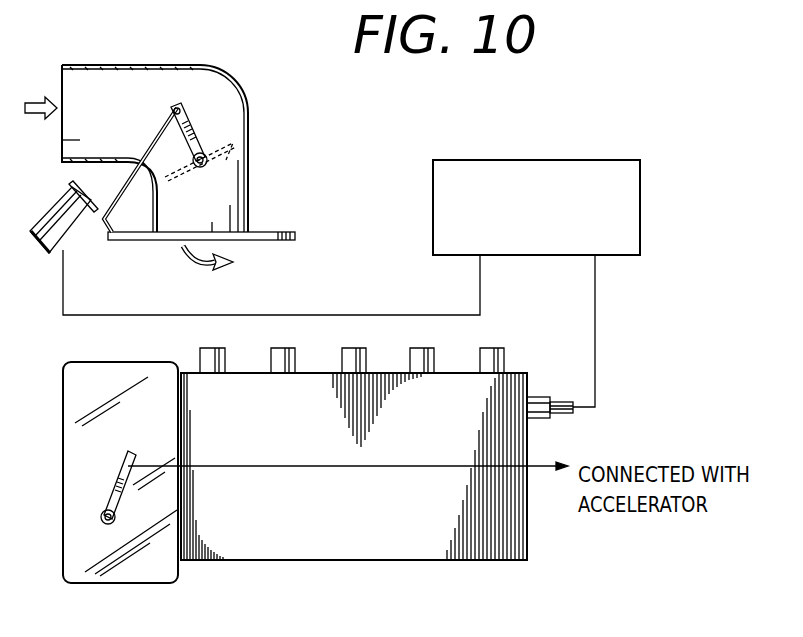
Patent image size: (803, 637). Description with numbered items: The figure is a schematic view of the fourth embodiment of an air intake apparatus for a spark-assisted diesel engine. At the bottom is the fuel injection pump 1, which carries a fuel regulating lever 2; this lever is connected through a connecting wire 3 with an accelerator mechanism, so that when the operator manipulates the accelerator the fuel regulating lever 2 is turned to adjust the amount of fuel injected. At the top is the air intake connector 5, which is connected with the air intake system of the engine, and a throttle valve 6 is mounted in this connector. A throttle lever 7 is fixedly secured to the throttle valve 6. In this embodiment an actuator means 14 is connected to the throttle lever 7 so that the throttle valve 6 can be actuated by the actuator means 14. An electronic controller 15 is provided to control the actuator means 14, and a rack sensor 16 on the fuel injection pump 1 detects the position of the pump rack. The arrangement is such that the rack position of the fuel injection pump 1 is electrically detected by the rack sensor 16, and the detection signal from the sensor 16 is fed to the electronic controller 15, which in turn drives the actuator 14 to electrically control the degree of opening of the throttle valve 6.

The fuel injection pump 1 is at (528, 531).
The fuel regulating lever 2 is at (121, 484).
The connecting wire 3 is at (327, 466).
The air intake connector 5 is at (102, 84).
The throttle valve 6 is at (228, 158).
The throttle lever 7 is at (189, 120).
The actuator means 14 is at (56, 212).
The electronic controller 15 is at (433, 211).
The rack sensor 16 is at (540, 397).